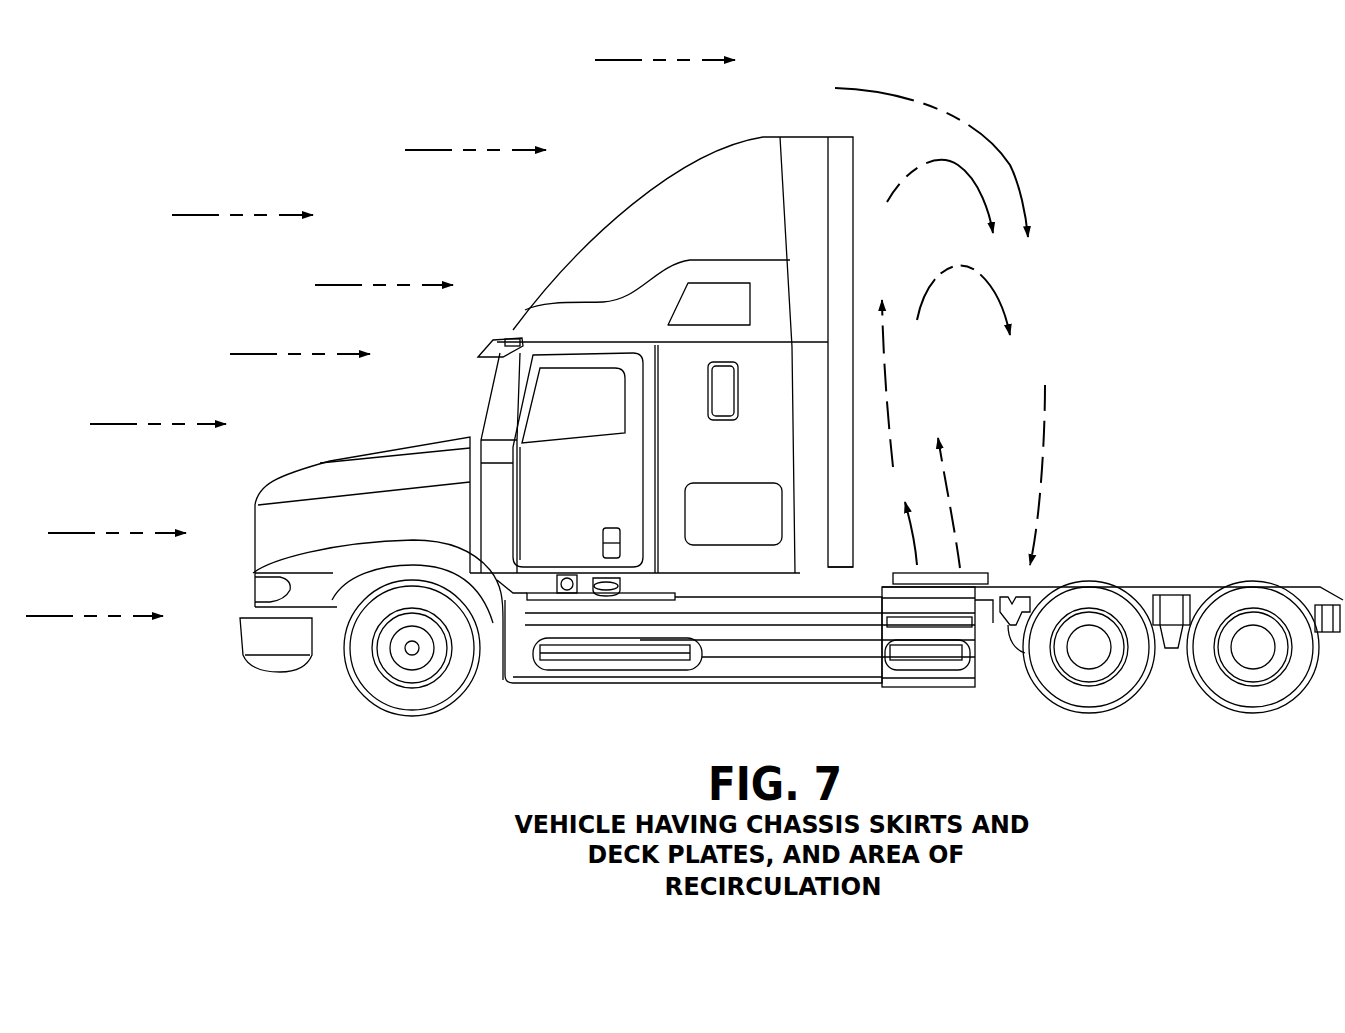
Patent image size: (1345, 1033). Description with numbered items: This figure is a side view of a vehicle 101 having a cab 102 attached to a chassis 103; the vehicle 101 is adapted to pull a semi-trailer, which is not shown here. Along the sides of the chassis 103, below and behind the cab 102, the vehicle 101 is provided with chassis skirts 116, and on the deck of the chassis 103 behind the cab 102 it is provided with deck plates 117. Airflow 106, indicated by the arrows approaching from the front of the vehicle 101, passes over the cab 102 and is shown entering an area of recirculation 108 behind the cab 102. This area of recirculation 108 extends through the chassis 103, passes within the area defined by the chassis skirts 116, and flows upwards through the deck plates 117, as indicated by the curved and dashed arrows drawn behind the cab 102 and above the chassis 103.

The vehicle 101 is at (383, 445).
The cab 102 is at (511, 322).
The chassis 103 is at (1178, 586).
The airflow 106 is at (498, 148).
The area of recirculation 108 is at (945, 395).
The chassis skirts 116 is at (870, 666).
The deck plates 117 is at (981, 568).